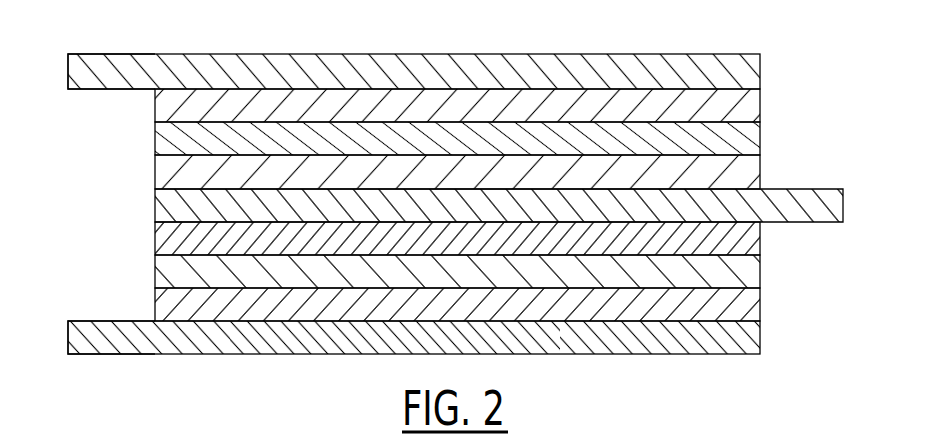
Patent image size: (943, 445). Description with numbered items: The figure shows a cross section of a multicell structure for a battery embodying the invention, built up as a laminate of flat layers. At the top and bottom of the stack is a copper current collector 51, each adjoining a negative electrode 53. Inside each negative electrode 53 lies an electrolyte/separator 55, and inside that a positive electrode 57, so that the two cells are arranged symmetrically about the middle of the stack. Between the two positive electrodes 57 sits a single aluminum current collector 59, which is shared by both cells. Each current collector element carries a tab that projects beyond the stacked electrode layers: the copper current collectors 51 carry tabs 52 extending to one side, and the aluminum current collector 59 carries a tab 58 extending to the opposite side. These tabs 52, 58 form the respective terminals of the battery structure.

The copper current collector 51 is at (757, 72).
The tab 52 is at (102, 53).
The negative electrode 53 is at (757, 110).
The electrolyte/separator 55 is at (757, 138).
The positive electrode 57 is at (158, 167).
The tab 58 is at (841, 208).
The aluminum current collector 59 is at (158, 200).